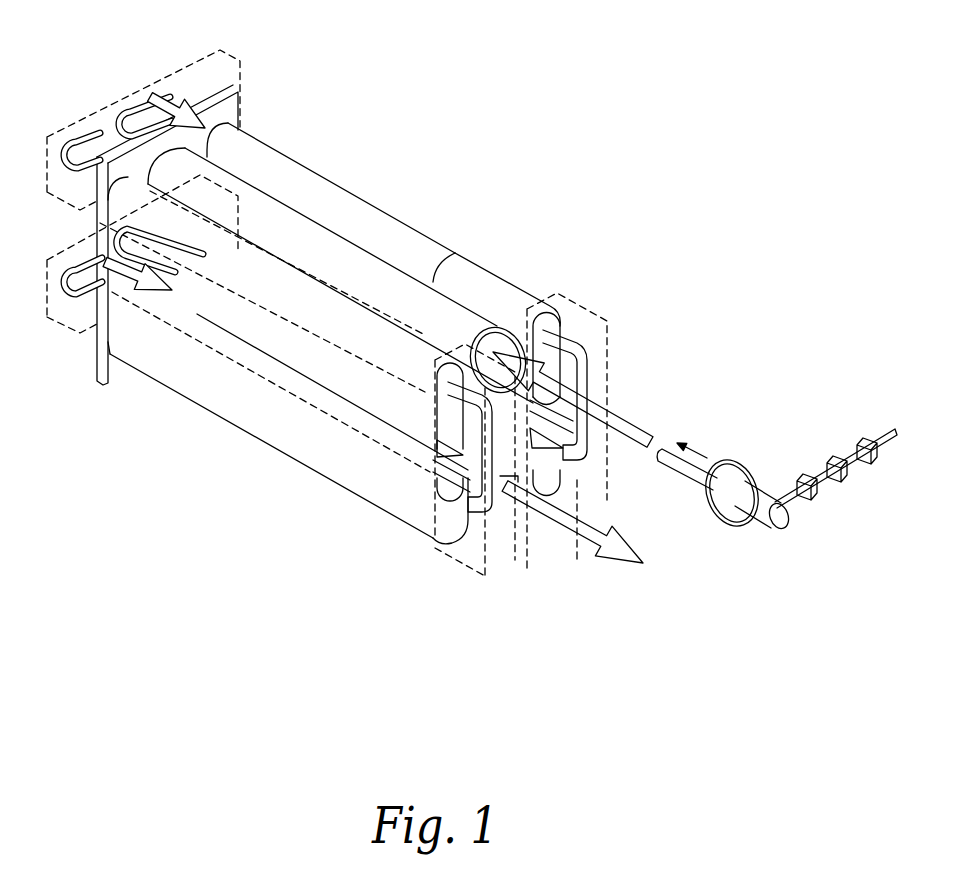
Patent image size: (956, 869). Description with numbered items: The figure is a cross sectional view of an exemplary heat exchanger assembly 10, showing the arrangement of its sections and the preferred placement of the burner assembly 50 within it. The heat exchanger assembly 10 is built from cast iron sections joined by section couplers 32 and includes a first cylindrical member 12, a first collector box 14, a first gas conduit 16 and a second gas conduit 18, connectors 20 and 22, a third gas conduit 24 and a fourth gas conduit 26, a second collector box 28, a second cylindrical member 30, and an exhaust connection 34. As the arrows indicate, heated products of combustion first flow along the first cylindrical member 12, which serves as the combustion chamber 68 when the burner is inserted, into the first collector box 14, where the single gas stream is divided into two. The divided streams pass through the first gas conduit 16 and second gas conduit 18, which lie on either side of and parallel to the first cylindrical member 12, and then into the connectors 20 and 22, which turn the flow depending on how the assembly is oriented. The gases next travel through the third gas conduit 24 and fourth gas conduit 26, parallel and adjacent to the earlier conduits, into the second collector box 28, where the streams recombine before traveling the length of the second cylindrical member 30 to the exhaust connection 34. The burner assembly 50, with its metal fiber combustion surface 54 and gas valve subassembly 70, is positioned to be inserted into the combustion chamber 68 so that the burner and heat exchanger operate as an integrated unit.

The heat exchanger assembly 10 is at (455, 154).
The first cylindrical member 12 is at (452, 253).
The first collector box 14 is at (222, 50).
The first gas conduit 16 is at (200, 314).
The second gas conduit 18 is at (350, 190).
The connector 20 is at (448, 560).
The connector 22 is at (608, 320).
The third gas conduit 24 is at (311, 472).
The fourth gas conduit 26 is at (565, 491).
The second collector box 28 is at (60, 345).
The second cylindrical member 30 is at (503, 485).
The section coupler 32 is at (600, 405).
The exhaust connection 34 is at (503, 505).
The burner assembly 50 is at (830, 538).
The metal fiber combustion surface 54 is at (720, 472).
The combustion chamber 68 is at (513, 287).
The gas valve subassembly 70 is at (824, 430).